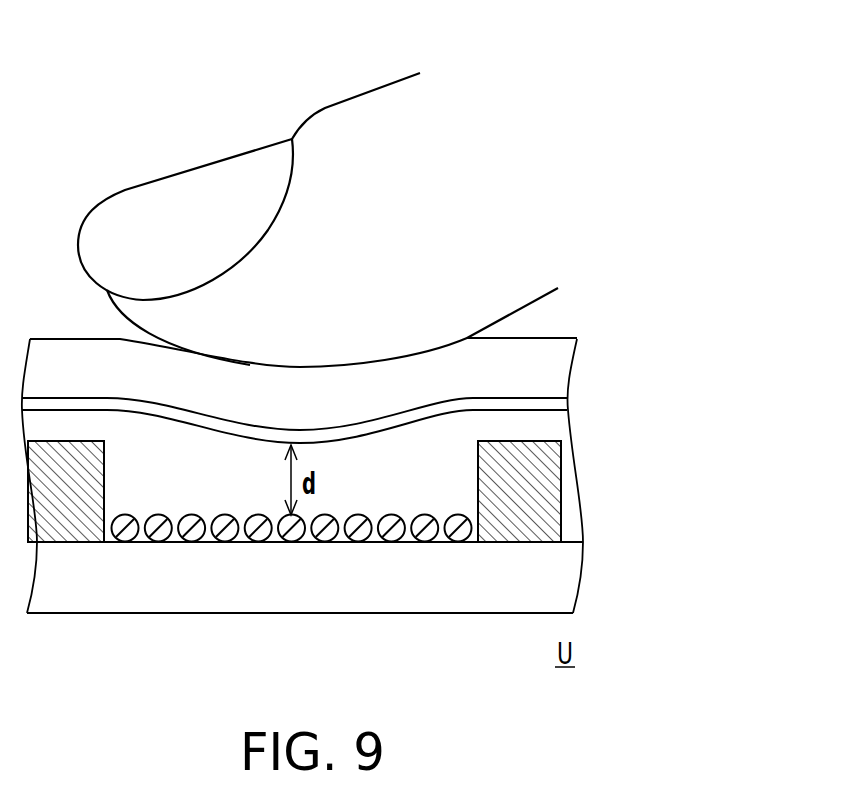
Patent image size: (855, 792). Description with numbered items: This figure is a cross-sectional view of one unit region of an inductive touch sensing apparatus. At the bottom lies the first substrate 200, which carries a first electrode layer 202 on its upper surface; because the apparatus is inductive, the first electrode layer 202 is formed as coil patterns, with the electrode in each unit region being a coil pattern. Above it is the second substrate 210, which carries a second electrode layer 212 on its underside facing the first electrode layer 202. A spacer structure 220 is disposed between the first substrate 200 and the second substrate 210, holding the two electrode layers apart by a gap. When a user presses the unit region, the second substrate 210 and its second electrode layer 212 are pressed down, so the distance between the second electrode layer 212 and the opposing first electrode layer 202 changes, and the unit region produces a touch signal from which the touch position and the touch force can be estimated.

The first substrate 200 is at (570, 585).
The first electrode layer 202 is at (460, 531).
The second substrate 210 is at (560, 370).
The second electrode layer 212 is at (560, 408).
The spacer structure 220 is at (560, 503).